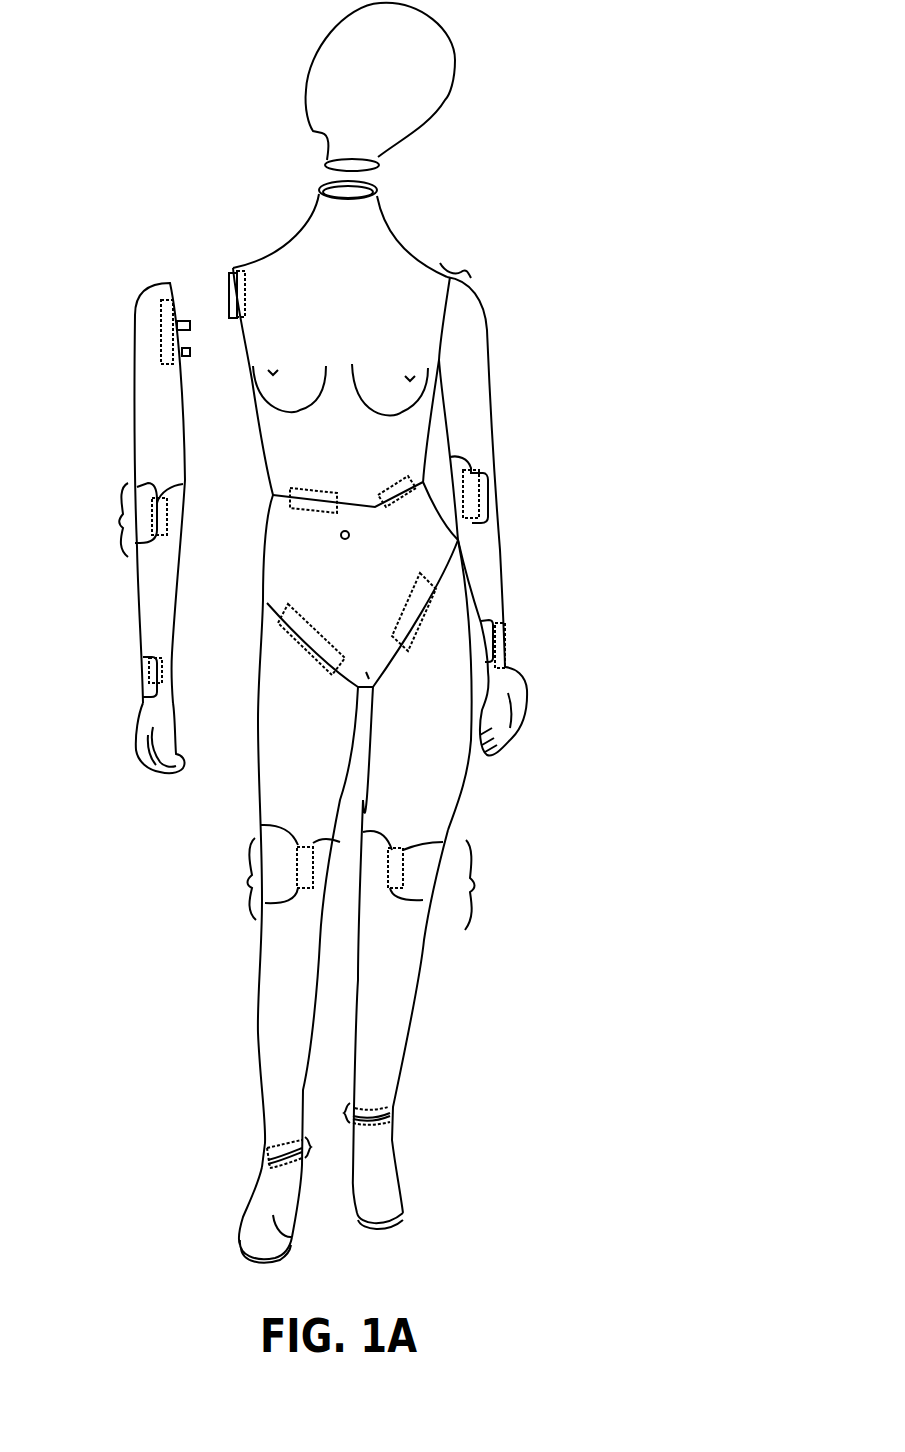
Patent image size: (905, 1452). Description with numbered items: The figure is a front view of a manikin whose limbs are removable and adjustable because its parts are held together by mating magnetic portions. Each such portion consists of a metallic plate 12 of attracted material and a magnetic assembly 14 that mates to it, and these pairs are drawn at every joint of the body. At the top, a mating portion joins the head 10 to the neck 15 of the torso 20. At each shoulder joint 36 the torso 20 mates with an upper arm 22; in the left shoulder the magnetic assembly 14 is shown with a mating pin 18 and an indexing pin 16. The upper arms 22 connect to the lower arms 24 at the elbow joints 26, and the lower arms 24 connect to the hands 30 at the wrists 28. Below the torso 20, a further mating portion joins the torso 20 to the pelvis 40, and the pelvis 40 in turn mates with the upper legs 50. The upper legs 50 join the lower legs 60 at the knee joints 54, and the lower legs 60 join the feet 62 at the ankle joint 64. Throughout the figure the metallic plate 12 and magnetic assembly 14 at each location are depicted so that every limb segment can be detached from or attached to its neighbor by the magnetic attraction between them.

The head 10 is at (418, 99).
The metallic plate 12 is at (362, 188).
The magnetic assembly 14 is at (318, 180).
The neck 15 is at (357, 224).
The indexing pin 16 is at (190, 352).
The mating pin 18 is at (179, 312).
The torso 20 is at (397, 307).
The upper arm 22 is at (472, 388).
The lower arm 24 is at (151, 573).
The elbow joint 26 is at (286, 515).
The wrist 28 is at (163, 657).
The hand 30 is at (145, 735).
The shoulder joint 36 is at (459, 259).
The pelvis 40 is at (314, 571).
The upper leg 50 is at (307, 739).
The knee joint 54 is at (361, 877).
The lower leg 60 is at (281, 988).
The foot 62 is at (292, 1237).
The ankle joint 64 is at (329, 1133).